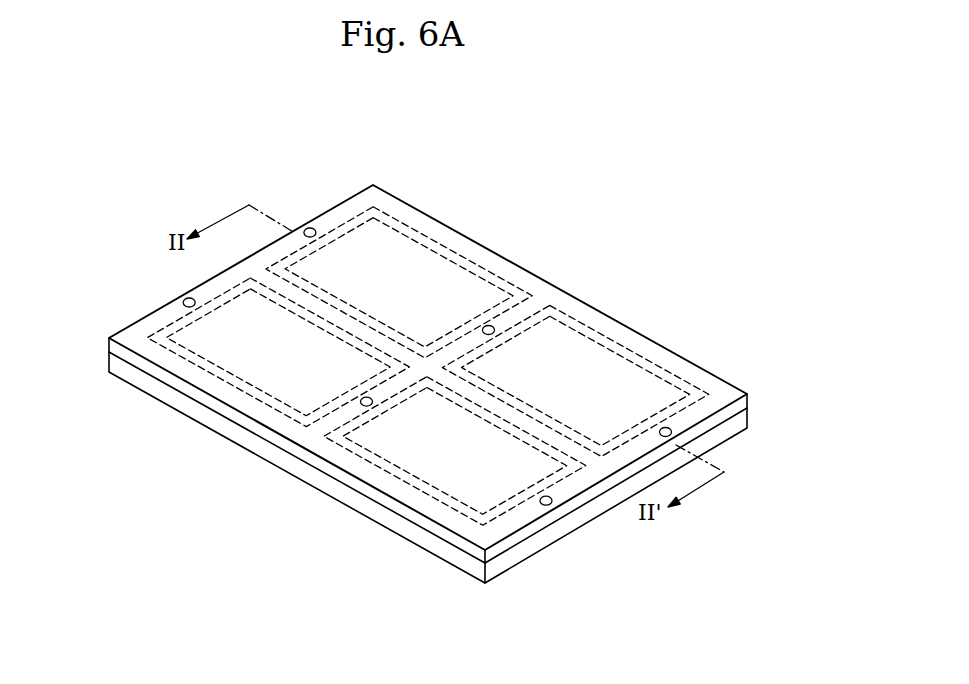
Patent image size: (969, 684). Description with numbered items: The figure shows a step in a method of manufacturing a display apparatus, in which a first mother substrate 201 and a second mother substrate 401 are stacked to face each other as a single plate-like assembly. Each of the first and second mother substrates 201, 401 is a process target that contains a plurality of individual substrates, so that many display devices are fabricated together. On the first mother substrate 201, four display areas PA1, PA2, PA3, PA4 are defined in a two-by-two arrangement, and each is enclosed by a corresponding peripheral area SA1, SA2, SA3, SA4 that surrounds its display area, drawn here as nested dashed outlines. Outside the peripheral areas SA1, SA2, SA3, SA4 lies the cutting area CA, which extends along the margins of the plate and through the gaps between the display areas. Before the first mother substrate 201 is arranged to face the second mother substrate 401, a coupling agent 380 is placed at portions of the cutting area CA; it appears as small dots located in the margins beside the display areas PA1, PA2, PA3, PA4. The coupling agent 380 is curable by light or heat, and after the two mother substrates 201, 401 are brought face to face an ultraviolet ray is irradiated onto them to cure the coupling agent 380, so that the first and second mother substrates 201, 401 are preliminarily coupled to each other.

The display area PA1 is at (417, 242).
The display area PA2 is at (592, 338).
The display area PA3 is at (208, 362).
The display area PA4 is at (377, 465).
The peripheral area SA1 is at (483, 267).
The peripheral area SA2 is at (657, 365).
The peripheral area SA3 is at (245, 393).
The peripheral area SA4 is at (422, 493).
The coupling agent 380 is at (492, 324).
The cutting area CA is at (720, 400).
The second mother substrate 401 is at (750, 401).
The first mother substrate 201 is at (718, 436).